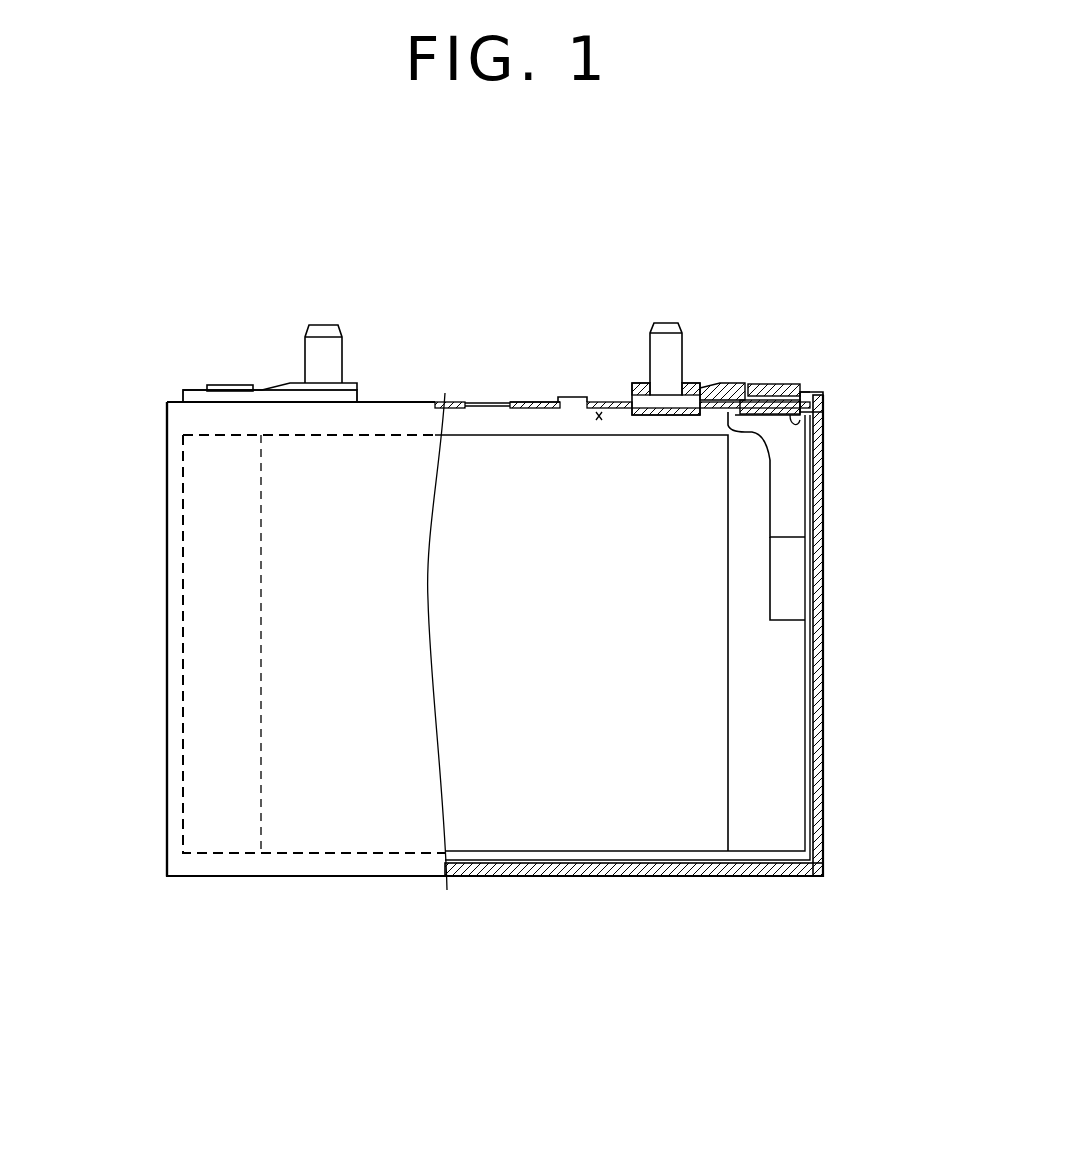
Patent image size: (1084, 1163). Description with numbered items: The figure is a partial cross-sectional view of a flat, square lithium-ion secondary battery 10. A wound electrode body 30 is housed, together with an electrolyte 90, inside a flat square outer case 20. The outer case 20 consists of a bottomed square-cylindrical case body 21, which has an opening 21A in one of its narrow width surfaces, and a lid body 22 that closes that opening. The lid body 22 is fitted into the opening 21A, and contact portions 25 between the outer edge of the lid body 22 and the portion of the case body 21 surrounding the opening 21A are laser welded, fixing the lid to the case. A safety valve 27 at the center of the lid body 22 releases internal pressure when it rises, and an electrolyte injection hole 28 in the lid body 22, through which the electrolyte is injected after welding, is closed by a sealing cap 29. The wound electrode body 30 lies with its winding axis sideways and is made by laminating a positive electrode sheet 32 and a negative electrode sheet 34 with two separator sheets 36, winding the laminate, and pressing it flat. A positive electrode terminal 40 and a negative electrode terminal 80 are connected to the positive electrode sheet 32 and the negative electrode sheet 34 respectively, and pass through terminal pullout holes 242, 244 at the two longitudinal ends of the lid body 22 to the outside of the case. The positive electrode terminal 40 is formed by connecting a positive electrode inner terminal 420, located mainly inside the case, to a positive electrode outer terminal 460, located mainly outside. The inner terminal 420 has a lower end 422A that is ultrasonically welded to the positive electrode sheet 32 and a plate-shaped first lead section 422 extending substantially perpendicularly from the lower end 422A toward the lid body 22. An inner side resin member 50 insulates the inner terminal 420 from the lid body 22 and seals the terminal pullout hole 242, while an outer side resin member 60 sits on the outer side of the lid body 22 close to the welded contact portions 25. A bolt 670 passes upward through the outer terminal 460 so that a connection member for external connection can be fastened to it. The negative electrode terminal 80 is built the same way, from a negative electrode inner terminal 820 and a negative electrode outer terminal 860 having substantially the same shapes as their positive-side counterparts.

The lithium-ion secondary battery 10 is at (130, 226).
The outer case 20 is at (167, 505).
The case body 21 is at (820, 694).
The opening 21A is at (583, 402).
The lid body 22 is at (447, 402).
The contact portions 25 is at (815, 395).
The safety valve 27 is at (487, 410).
The electrolyte injection hole 28 is at (565, 408).
The sealing cap 29 is at (530, 400).
The wound electrode body 30 is at (637, 830).
The positive electrode sheet 32 is at (816, 830).
The negative electrode sheet 34 is at (181, 832).
The separator sheets 36 is at (515, 822).
The positive electrode terminal 40 is at (757, 452).
The positive electrode inner terminal 420 is at (812, 450).
The first lead section 422 is at (795, 518).
The lower end 422A is at (795, 606).
The inner side resin member 50 is at (795, 422).
The outer side resin member 60 is at (364, 394).
The bolt 670 is at (350, 330).
The negative electrode terminal 80 is at (266, 292).
The negative electrode inner terminal 820 is at (236, 386).
The negative electrode outer terminal 860 is at (292, 386).
The electrolyte 90 is at (660, 785).
The positive electrode terminal pullout hole 242 is at (760, 384).
The negative electrode terminal pullout hole 244 is at (223, 403).
The positive electrode outer terminal 460 is at (705, 388).